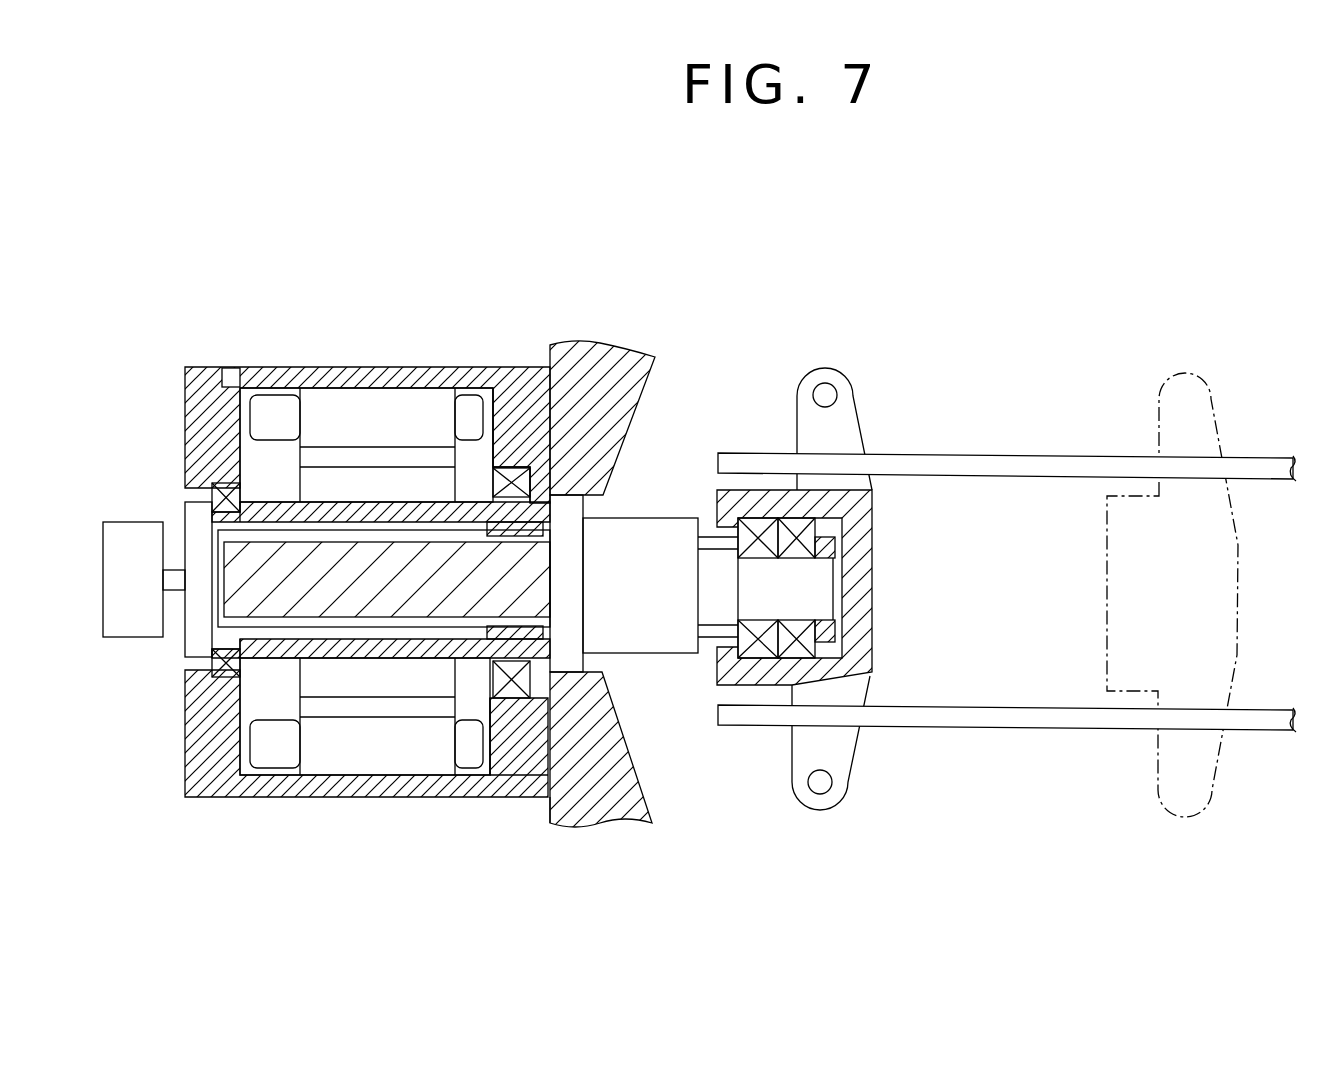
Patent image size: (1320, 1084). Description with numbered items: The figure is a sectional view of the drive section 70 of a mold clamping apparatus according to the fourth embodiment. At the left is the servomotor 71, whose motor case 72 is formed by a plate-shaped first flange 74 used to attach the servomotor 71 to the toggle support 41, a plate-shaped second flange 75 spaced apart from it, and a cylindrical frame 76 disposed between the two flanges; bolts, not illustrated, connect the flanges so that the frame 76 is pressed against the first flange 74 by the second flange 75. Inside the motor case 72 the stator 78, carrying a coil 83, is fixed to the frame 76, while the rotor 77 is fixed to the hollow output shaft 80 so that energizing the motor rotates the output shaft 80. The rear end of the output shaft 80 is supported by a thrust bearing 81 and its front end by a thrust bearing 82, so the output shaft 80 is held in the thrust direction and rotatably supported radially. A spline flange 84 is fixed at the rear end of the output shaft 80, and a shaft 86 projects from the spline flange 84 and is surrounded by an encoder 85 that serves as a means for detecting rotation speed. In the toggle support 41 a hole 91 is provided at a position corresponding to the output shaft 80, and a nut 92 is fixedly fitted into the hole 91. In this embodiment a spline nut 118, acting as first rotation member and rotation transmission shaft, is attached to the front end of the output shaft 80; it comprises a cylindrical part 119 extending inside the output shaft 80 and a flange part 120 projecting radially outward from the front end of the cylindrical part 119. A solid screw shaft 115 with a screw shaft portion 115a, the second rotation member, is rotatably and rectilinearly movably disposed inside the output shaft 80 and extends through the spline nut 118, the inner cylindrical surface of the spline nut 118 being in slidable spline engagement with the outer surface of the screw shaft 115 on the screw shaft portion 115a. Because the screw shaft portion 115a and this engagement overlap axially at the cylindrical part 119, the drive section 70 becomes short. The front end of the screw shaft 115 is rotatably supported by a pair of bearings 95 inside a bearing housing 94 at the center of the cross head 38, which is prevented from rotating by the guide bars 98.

The drive section 70 is at (556, 246).
The servomotor 71 is at (397, 247).
The motor case 72 is at (247, 360).
The rotor 77 is at (320, 480).
The stator 78 is at (374, 420).
The coil 83 is at (470, 400).
The first flange 74 is at (527, 382).
The thrust bearing 82 is at (549, 482).
The second flange 75 is at (196, 403).
The frame 76 is at (350, 798).
The encoder 85 is at (122, 530).
The shaft 86 is at (172, 578).
The spline flange 84 is at (196, 643).
The thrust bearing 81 is at (220, 680).
The screw shaft 115 is at (413, 634).
The screw shaft portion 115a is at (262, 628).
The output shaft 80 is at (316, 632).
The cylindrical part 119 is at (515, 798).
The flange part 120 is at (550, 814).
The spline nut 118 is at (577, 885).
The toggle support 41 is at (632, 812).
The hole 91 is at (595, 662).
The nut 92 is at (655, 517).
The cross head 38 is at (835, 431).
The bearing housing 94 is at (850, 522).
The bearings 95 is at (797, 560).
The guide bars 98 is at (1070, 455).